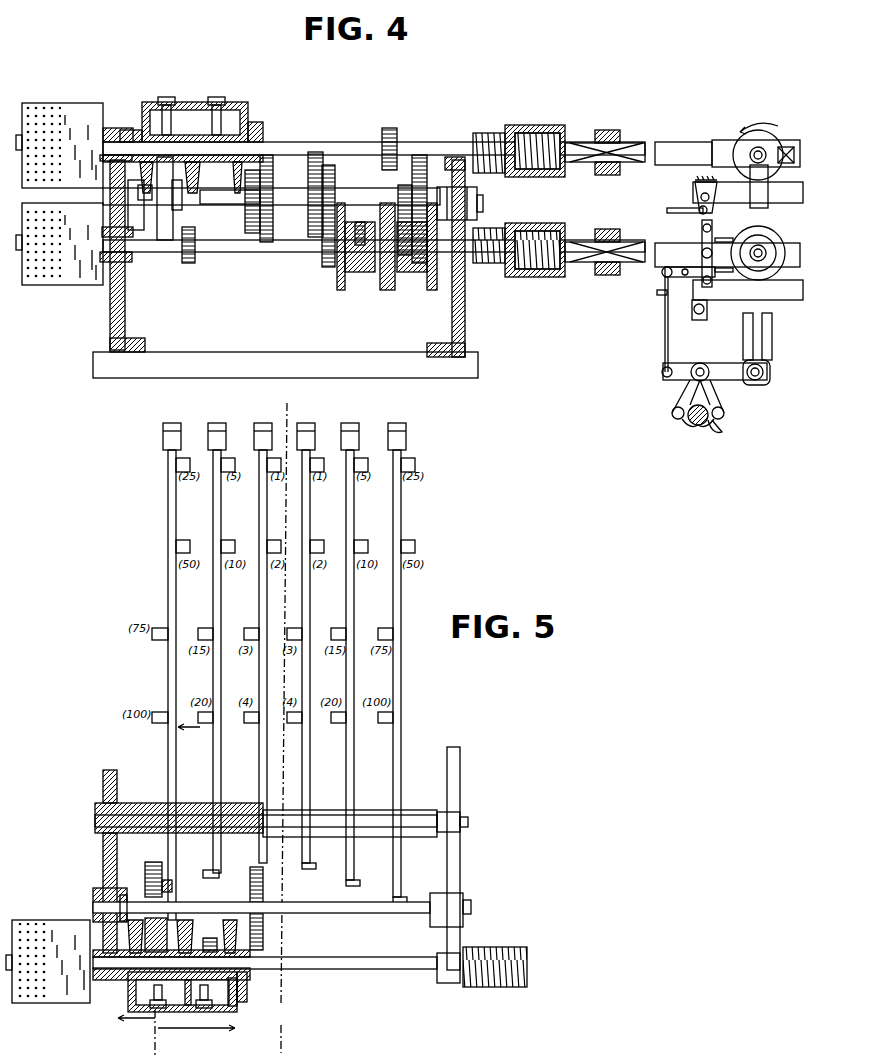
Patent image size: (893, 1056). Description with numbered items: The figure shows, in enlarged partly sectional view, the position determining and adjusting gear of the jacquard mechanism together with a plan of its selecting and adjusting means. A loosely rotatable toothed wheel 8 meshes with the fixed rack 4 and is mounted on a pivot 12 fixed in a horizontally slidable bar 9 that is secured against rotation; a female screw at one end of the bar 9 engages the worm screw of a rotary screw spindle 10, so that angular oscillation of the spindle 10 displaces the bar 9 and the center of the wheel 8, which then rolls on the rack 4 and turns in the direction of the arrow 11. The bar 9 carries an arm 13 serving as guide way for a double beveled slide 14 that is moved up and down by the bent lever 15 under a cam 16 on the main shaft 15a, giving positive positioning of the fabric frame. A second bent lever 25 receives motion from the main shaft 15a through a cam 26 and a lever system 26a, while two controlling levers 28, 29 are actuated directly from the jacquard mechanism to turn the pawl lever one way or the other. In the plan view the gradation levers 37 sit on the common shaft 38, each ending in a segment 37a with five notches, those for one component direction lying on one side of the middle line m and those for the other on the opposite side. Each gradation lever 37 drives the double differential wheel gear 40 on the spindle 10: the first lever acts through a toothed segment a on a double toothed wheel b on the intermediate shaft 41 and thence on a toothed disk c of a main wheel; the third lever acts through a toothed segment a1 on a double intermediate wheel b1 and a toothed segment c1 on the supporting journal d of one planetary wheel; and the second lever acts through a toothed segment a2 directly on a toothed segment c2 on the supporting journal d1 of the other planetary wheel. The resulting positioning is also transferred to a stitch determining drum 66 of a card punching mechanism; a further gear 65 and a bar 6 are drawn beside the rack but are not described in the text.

In FIG. 4, the stitch determining drum 66 is at (68, 110).
In FIG. 5, the stitch determining drum 66 is at (43, 1003).
In FIG. 4, the supporting journal d is at (163, 128).
In FIG. 5, the supporting journal d is at (130, 987).
In FIG. 4, the double differential wheel gear 40 is at (206, 110).
In FIG. 5, the double differential wheel gear 40 is at (176, 1008).
In FIG. 4, the supporting journal d1 is at (226, 128).
In FIG. 5, the supporting journal d1 is at (240, 979).
In FIG. 4, the toothed disk c is at (256, 122).
In FIG. 5, the toothed disk c is at (243, 985).
In FIG. 4, the double toothed wheel b is at (308, 160).
In FIG. 5, the double toothed wheel b is at (255, 962).
In FIG. 4, the gear 65 is at (390, 128).
In FIG. 4, the double intermediate wheel b1 is at (418, 160).
In FIG. 5, the double intermediate wheel b1 is at (150, 862).
In FIG. 4, the toothed segment c2 is at (360, 222).
In FIG. 5, the toothed segment c2 is at (210, 938).
In FIG. 4, the toothed segment c1 is at (406, 258).
In FIG. 5, the toothed segment c1 is at (150, 940).
In FIG. 4, the intermediate shaft 41 is at (222, 205).
In FIG. 5, the intermediate shaft 41 is at (95, 906).
In FIG. 4, the screw spindle 10 is at (455, 148).
In FIG. 5, the screw spindle 10 is at (360, 966).
In FIG. 4, the horizontally slidable bar 9 is at (631, 150).
In FIG. 4, the toothed wheel 8 is at (740, 135).
In FIG. 4, the arrow 11 is at (759, 165).
In FIG. 4, the pivot 12 is at (766, 150).
In FIG. 4, the arm 13 is at (761, 186).
In FIG. 4, the bar 6 is at (787, 203).
In FIG. 4, the rack 4 is at (790, 300).
In FIG. 4, the controlling lever 28 is at (697, 197).
In FIG. 4, the bent lever 25 is at (680, 268).
In FIG. 4, the controlling lever 29 is at (695, 315).
In FIG. 4, the lever system 26a is at (665, 370).
In FIG. 4, the bent lever 15 is at (716, 368).
In FIG. 4, the double beveled slide 14 is at (760, 357).
In FIG. 4, the cam 26 is at (683, 418).
In FIG. 4, the cam 16 is at (716, 426).
In FIG. 4, the main shaft 15a is at (698, 426).
In FIG. 5, the segment 37a is at (258, 423).
In FIG. 5, the gradation lever 37 is at (262, 775).
In FIG. 5, the shaft 38 is at (95, 819).
In FIG. 5, the toothed segment a is at (258, 860).
In FIG. 5, the toothed segment a1 is at (172, 886).
In FIG. 5, the toothed segment a2 is at (349, 884).
In FIG. 5, the middle line m is at (286, 706).